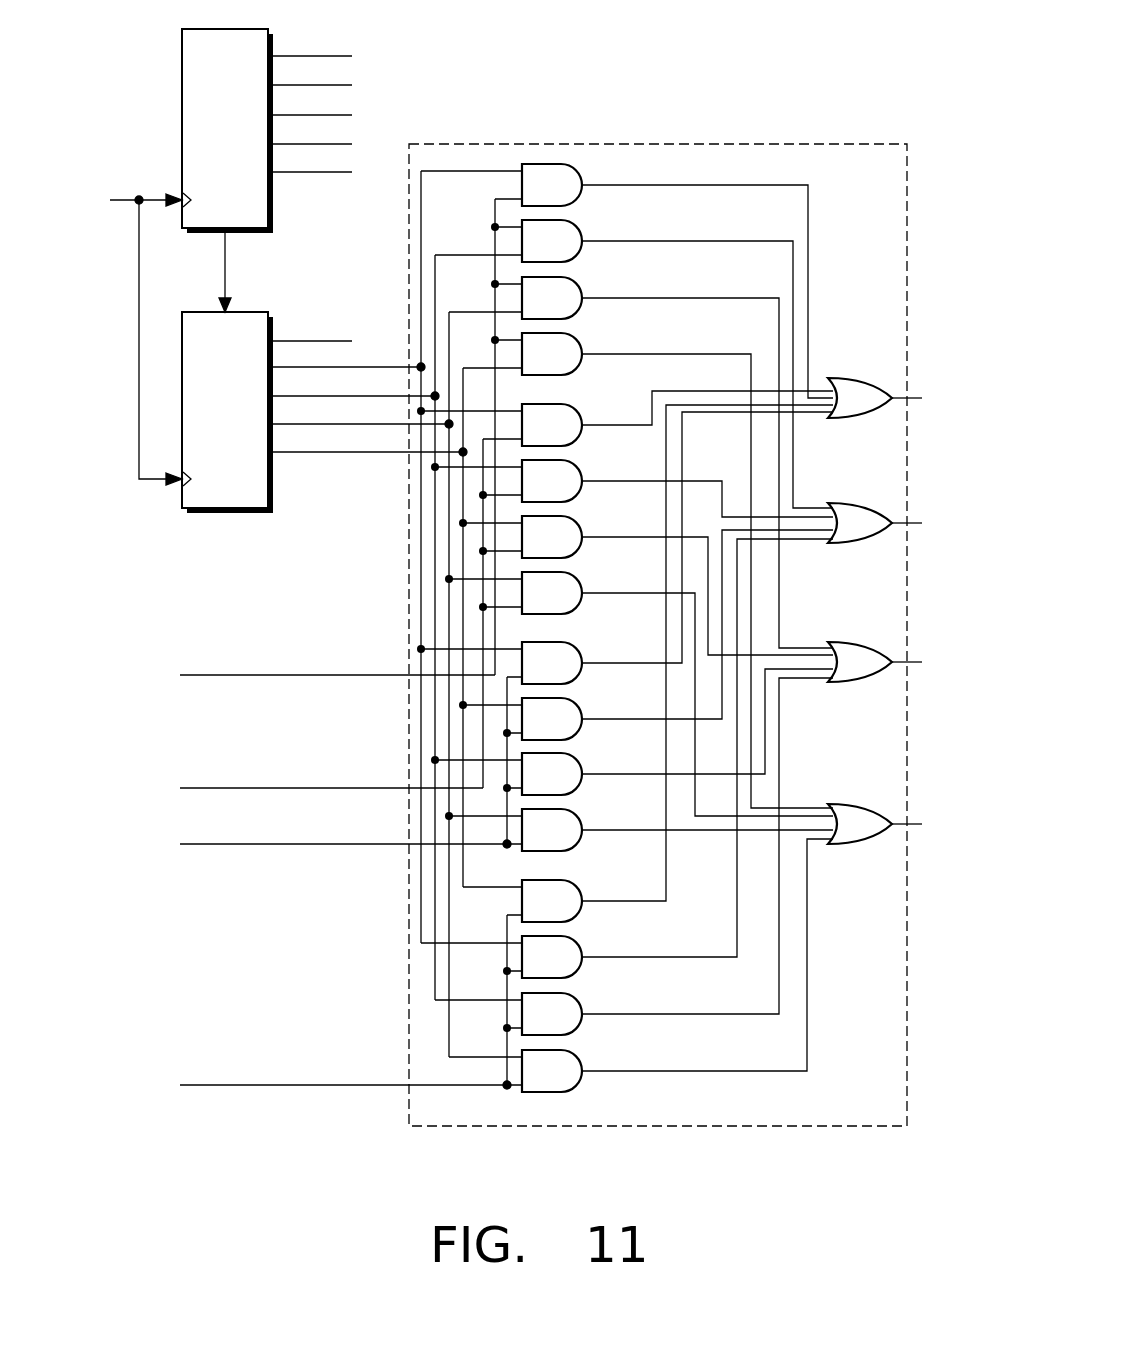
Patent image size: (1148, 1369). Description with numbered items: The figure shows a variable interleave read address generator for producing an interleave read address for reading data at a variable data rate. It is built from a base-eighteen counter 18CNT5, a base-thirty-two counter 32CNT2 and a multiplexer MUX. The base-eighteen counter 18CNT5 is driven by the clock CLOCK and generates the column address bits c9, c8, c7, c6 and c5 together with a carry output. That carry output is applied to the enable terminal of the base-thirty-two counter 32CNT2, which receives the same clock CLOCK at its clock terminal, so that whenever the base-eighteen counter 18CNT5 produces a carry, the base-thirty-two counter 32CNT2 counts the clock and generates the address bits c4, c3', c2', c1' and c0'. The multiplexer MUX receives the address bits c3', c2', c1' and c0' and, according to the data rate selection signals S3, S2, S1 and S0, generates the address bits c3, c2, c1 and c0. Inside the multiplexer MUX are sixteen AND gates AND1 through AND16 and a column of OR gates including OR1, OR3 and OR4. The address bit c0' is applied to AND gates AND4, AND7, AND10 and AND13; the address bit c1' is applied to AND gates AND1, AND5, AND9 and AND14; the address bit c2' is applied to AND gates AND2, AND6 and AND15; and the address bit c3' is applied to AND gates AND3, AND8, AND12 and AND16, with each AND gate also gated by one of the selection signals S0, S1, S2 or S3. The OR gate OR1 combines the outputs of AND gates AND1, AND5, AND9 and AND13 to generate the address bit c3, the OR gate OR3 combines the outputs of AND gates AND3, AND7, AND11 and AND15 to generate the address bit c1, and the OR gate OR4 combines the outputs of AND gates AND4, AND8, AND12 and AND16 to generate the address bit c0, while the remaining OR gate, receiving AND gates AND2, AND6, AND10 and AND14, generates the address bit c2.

The base-18 counter 18CNT5 is at (273, 200).
The base-32 counter 32CNT2 is at (273, 479).
The multiplexer MUX is at (611, 1127).
The clock CLOCK is at (142, 328).
The AND gate AND1 is at (566, 1092).
The AND gate AND2 is at (566, 1035).
The AND gate AND3 is at (566, 978).
The AND gate AND4 is at (566, 922).
The AND gate AND5 is at (566, 851).
The AND gate AND6 is at (566, 795).
The AND gate AND7 is at (566, 740).
The AND gate AND8 is at (566, 684).
The AND gate AND9 is at (566, 614).
The AND gate AND10 is at (566, 558).
The AND gate AND11 is at (566, 502).
The AND gate AND12 is at (566, 446).
The AND gate AND13 is at (566, 375).
The AND gate AND14 is at (566, 319).
The AND gate AND15 is at (566, 262).
The AND gate AND16 is at (566, 206).
The OR gate OR1 is at (852, 682).
The OR gate OR3 is at (850, 543).
The OR gate OR4 is at (848, 418).
The address bit c0 is at (922, 826).
The address bit c1 is at (922, 664).
The address bit c2 is at (922, 525).
The address bit c3 is at (922, 400).
The address bit c4 is at (329, 343).
The column address bit c5 is at (327, 174).
The column address bit c6 is at (327, 145).
The column address bit c7 is at (327, 116).
The column address bit c8 is at (327, 87).
The column address bit c9 is at (327, 58).
The address bit c0' is at (370, 442).
The address bit c1' is at (363, 414).
The address bit c2' is at (356, 386).
The address bit c3' is at (349, 357).
The data rate selection signal S0 is at (317, 676).
The data rate selection signal S1 is at (311, 789).
The data rate selection signal S2 is at (331, 846).
The data rate selection signal S3 is at (331, 1085).